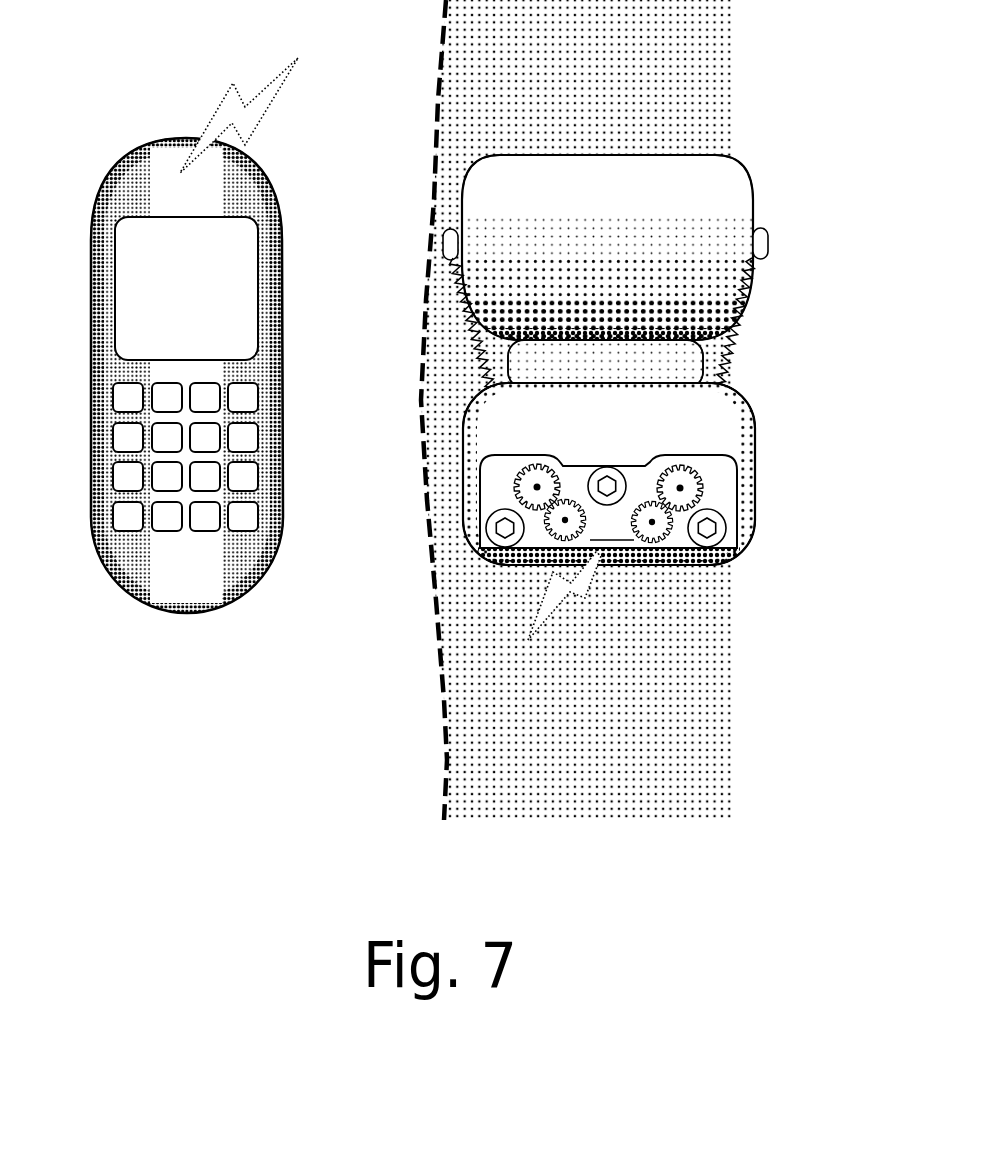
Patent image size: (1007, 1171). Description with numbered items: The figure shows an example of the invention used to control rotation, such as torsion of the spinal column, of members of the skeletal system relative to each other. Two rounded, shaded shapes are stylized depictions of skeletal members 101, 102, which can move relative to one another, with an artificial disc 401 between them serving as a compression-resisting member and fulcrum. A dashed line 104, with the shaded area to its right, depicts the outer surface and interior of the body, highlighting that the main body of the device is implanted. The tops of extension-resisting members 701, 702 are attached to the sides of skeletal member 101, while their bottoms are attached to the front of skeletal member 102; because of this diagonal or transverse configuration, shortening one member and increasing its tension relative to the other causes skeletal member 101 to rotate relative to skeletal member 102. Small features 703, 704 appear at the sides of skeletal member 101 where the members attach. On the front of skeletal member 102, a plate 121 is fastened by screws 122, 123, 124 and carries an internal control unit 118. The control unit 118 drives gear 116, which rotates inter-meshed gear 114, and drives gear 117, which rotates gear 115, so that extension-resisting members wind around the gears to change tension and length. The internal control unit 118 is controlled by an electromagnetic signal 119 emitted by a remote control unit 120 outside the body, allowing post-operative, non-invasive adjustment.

The dashed line 104 is at (437, 45).
The remote control unit 120 is at (133, 180).
The electromagnetic signal 119 is at (228, 107).
The skeletal member 101 is at (477, 220).
The left button 703 is at (448, 248).
The right button 704 is at (757, 243).
The extension-resisting member 701 is at (507, 423).
The extension-resisting member 702 is at (707, 432).
The artificial disc 401 is at (610, 365).
The skeletal member 102 is at (472, 465).
The plate 121 is at (720, 477).
The gear 114 is at (514, 492).
The gear 115 is at (703, 493).
The gear 116 is at (548, 532).
The gear 117 is at (662, 527).
The screw 123 is at (612, 490).
The screw 122 is at (497, 533).
The screw 124 is at (710, 532).
The internal control unit 118 is at (612, 537).